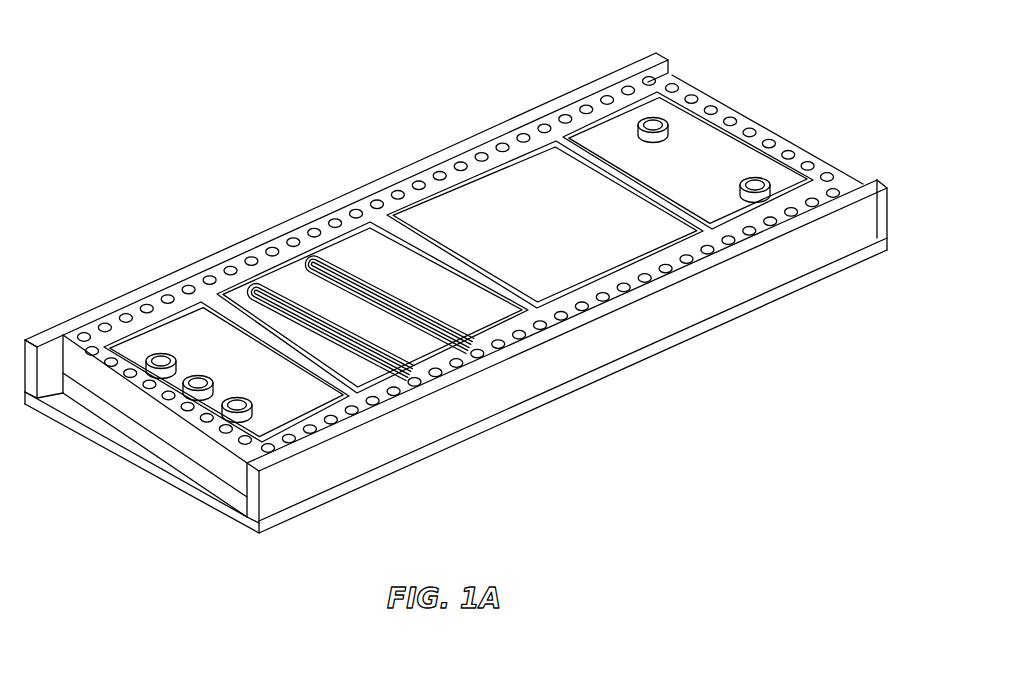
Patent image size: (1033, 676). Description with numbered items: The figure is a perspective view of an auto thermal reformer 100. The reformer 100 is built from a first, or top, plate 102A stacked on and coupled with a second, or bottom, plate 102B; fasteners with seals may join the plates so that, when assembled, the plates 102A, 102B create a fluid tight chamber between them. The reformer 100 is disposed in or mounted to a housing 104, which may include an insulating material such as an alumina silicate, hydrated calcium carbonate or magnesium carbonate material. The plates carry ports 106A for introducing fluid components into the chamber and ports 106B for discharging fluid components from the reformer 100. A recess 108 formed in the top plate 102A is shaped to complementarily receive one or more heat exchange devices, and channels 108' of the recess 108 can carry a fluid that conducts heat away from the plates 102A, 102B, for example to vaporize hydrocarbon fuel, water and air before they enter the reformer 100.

The auto thermal reformer 100 is at (224, 103).
The first plate 102A is at (90, 325).
The second plate 102B is at (128, 423).
The housing 104 is at (431, 160).
The ports 106A is at (645, 115).
The ports 106B is at (161, 352).
The recess 108 is at (389, 230).
The channels 108' is at (329, 263).